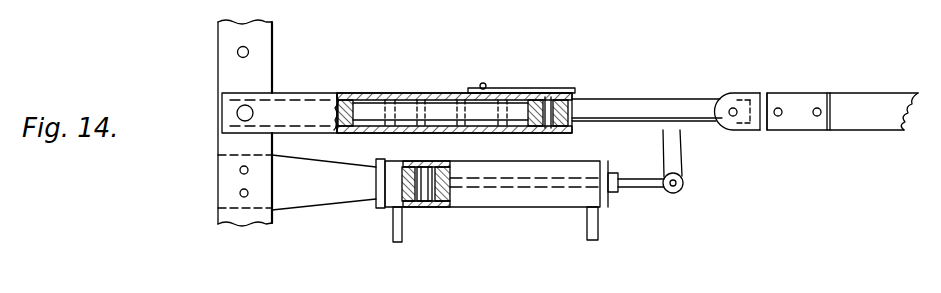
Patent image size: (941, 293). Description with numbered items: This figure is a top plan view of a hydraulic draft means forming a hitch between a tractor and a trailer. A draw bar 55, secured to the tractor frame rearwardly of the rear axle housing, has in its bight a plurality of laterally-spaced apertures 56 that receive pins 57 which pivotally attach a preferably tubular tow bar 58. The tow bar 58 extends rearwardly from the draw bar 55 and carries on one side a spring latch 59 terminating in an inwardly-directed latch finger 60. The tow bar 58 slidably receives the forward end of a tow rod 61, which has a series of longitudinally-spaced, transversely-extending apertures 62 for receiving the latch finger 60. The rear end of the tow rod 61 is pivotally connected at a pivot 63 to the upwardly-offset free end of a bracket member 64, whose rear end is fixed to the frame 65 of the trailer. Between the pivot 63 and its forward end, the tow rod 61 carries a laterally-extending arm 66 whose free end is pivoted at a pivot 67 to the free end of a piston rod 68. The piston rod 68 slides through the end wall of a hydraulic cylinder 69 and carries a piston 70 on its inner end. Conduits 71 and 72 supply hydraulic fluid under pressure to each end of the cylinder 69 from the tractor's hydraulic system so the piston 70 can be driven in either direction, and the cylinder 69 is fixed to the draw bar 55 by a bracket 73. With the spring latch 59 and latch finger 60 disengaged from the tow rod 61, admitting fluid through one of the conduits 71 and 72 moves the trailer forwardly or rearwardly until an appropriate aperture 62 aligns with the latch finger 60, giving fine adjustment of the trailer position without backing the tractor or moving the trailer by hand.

The draw bar 55 is at (275, 32).
The apertures 56 is at (237, 52).
The pins 57 is at (238, 115).
The tow bar 58 is at (308, 92).
The spring latch 59 is at (510, 87).
The latch finger 60 is at (568, 93).
The tow rod 61 is at (647, 98).
The apertures 62 is at (410, 92).
The pivot 63 is at (737, 106).
The bracket member 64 is at (798, 100).
The frame 65 is at (873, 102).
The arm 66 is at (685, 157).
The pivot 67 is at (686, 183).
The piston rod 68 is at (647, 188).
The hydraulic cylinder 69 is at (540, 200).
The piston 70 is at (427, 201).
The conduit 71 is at (393, 230).
The conduit 72 is at (600, 228).
The bracket 73 is at (310, 202).